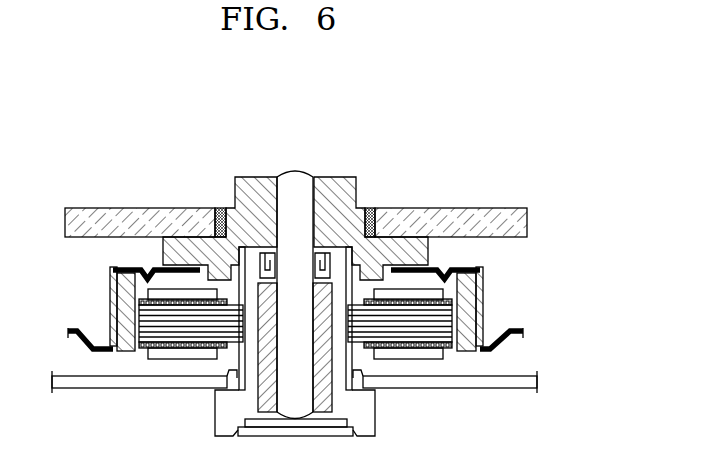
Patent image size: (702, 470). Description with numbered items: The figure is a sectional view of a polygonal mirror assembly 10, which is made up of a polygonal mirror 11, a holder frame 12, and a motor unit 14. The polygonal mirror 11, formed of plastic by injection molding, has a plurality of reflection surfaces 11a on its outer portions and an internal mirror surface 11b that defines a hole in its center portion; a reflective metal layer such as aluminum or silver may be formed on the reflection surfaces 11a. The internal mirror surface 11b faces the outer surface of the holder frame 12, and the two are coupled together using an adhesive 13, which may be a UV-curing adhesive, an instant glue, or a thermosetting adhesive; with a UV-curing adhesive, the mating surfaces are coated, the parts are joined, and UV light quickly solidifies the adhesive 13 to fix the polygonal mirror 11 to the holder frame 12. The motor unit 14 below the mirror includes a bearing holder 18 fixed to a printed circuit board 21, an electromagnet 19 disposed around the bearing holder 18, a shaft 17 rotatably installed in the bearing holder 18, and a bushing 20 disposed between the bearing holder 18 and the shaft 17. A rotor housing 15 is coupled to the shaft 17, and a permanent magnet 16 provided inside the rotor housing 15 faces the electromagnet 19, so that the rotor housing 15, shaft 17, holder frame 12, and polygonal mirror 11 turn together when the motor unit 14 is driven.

The polygonal mirror assembly 10 is at (118, 120).
The polygonal mirror 11 is at (324, 193).
The reflection surfaces 11a is at (528, 222).
The internal mirror surface 11b is at (372, 208).
The holder frame 12 is at (337, 177).
The adhesive 13 is at (221, 208).
The motor unit 14 is at (492, 289).
The rotor housing 15 is at (115, 298).
The permanent magnet 16 is at (125, 316).
The shaft 17 is at (295, 171).
The bearing holder 18 is at (217, 421).
The electromagnet 19 is at (190, 332).
The bushing 20 is at (327, 398).
The printed circuit board 21 is at (130, 384).